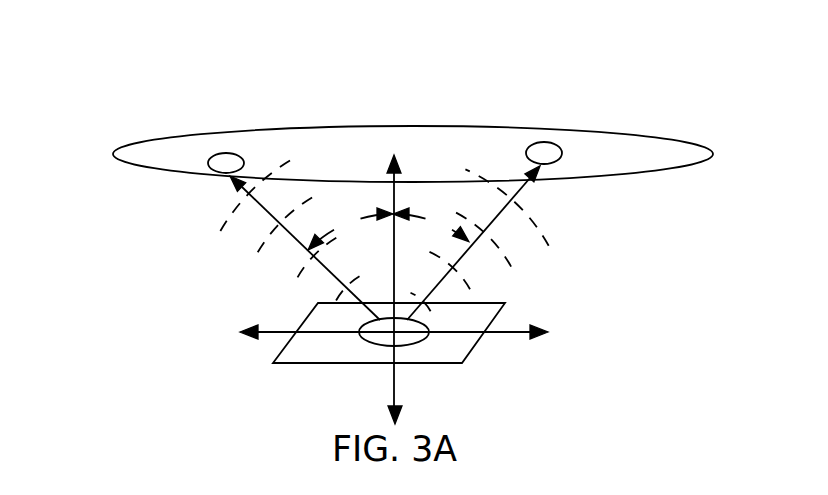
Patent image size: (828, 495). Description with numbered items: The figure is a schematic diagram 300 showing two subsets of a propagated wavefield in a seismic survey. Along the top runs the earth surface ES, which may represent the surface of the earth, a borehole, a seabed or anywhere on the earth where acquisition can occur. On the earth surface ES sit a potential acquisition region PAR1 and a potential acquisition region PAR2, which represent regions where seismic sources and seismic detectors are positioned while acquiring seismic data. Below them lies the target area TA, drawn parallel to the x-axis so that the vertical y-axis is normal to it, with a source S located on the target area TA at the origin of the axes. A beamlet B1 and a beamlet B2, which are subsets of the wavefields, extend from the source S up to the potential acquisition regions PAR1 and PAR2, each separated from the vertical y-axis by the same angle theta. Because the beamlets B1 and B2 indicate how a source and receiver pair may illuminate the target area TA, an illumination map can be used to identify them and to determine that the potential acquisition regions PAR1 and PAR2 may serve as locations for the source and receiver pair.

The schematic diagram 300 is at (449, 22).
The earth surface ES is at (168, 135).
The potential acquisition region PAR1 is at (232, 153).
The potential acquisition region PAR2 is at (548, 142).
The beamlet B1 is at (216, 231).
The beamlet B2 is at (536, 232).
The target area TA is at (303, 327).
The source S is at (392, 346).